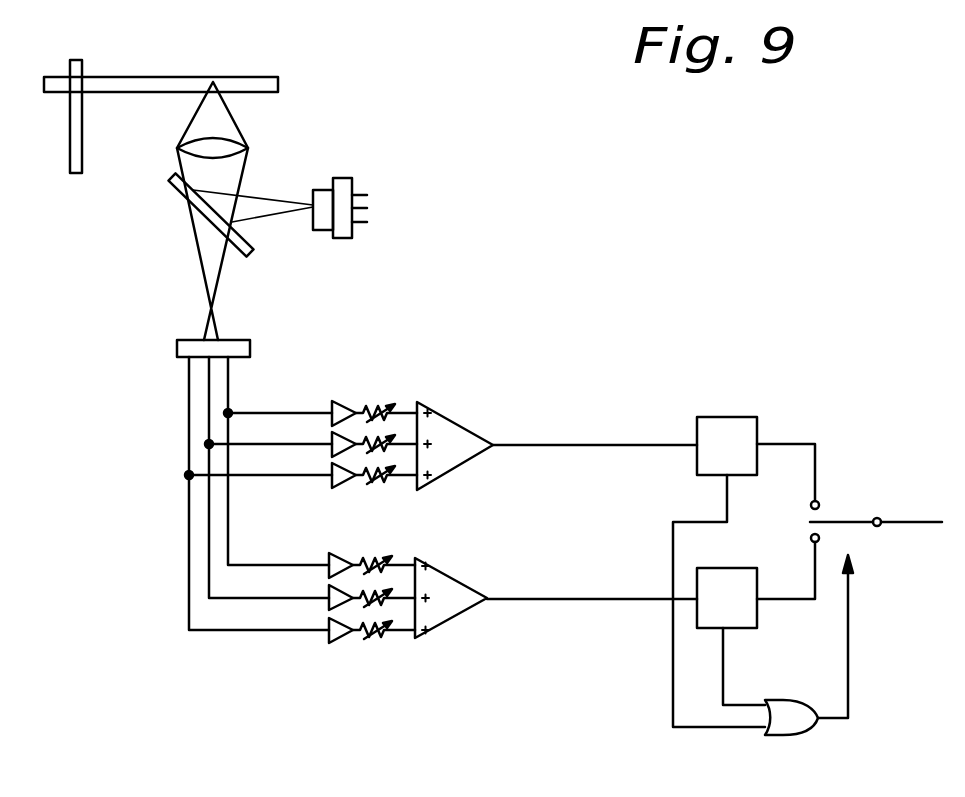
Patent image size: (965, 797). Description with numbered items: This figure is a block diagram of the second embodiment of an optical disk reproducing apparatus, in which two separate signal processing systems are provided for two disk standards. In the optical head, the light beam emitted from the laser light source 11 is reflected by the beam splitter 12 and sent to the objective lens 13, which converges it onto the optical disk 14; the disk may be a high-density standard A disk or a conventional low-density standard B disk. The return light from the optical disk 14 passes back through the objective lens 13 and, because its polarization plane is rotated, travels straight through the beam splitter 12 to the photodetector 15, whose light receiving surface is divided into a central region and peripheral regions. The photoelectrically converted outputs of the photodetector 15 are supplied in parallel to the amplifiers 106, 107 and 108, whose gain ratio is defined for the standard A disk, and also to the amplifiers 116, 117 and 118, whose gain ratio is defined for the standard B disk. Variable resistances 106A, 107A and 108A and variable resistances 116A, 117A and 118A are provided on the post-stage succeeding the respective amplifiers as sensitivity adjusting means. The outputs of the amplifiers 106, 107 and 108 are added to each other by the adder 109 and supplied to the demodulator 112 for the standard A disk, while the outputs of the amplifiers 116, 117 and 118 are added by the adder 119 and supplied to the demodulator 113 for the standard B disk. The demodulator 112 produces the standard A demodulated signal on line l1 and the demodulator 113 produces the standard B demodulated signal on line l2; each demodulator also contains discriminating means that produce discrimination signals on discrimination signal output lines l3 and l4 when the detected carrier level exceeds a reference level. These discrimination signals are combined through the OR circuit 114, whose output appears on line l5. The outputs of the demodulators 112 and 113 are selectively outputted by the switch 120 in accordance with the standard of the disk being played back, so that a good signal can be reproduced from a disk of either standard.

The laser light source 11 is at (352, 178).
The beam splitter 12 is at (253, 250).
The objective lens 13 is at (248, 148).
The optical disk 14 is at (278, 77).
The photodetector 15 is at (250, 348).
The amplifier 106 is at (345, 404).
The amplifier 107 is at (334, 440).
The amplifier 108 is at (338, 484).
The variable resistance 106A is at (383, 405).
The variable resistance 107A is at (397, 450).
The variable resistance 108A is at (393, 477).
The adder 109 is at (462, 420).
The demodulator 112 is at (742, 417).
The demodulator 113 is at (743, 628).
The OR circuit 114 is at (818, 728).
The amplifier 116 is at (329, 577).
The amplifier 117 is at (329, 605).
The amplifier 118 is at (336, 641).
The variable resistance 116A is at (380, 562).
The variable resistance 117A is at (390, 605).
The variable resistance 118A is at (385, 632).
The adder 119 is at (455, 623).
The switch 120 is at (845, 528).
The line l1 is at (808, 443).
The line l2 is at (777, 599).
The discrimination signal output line l3 is at (680, 522).
The discrimination signal output line l4 is at (723, 690).
The line l5 is at (848, 665).